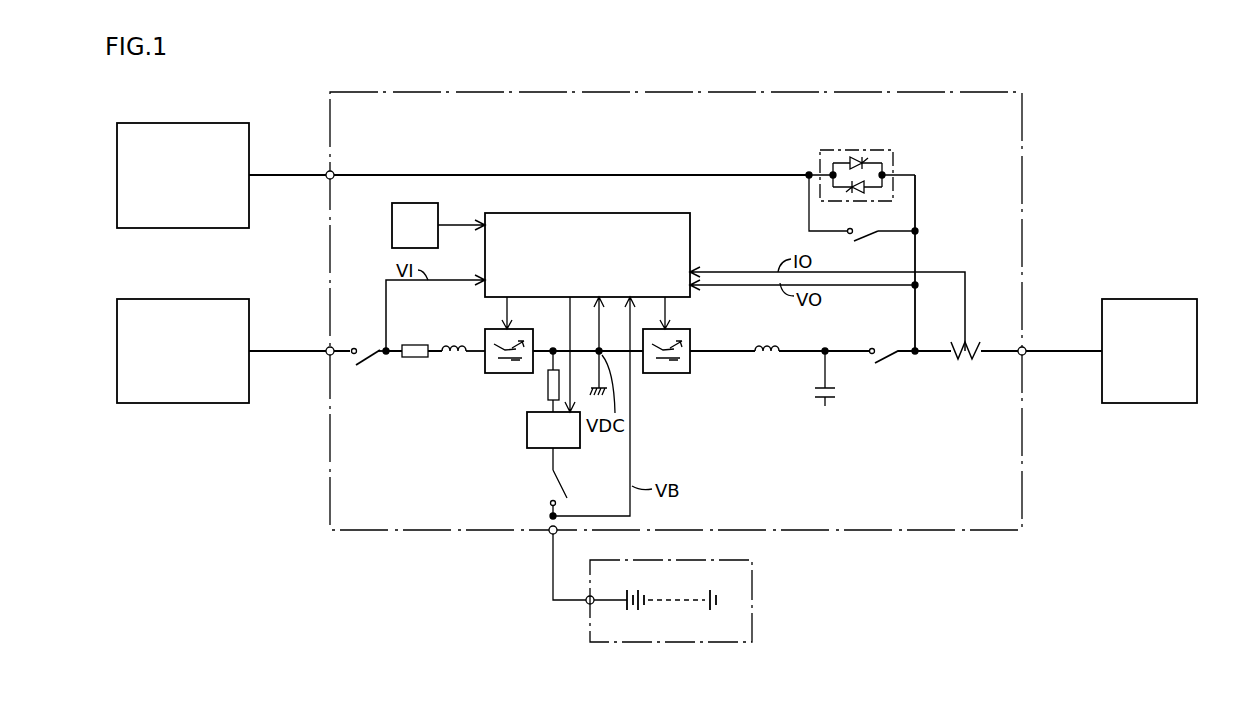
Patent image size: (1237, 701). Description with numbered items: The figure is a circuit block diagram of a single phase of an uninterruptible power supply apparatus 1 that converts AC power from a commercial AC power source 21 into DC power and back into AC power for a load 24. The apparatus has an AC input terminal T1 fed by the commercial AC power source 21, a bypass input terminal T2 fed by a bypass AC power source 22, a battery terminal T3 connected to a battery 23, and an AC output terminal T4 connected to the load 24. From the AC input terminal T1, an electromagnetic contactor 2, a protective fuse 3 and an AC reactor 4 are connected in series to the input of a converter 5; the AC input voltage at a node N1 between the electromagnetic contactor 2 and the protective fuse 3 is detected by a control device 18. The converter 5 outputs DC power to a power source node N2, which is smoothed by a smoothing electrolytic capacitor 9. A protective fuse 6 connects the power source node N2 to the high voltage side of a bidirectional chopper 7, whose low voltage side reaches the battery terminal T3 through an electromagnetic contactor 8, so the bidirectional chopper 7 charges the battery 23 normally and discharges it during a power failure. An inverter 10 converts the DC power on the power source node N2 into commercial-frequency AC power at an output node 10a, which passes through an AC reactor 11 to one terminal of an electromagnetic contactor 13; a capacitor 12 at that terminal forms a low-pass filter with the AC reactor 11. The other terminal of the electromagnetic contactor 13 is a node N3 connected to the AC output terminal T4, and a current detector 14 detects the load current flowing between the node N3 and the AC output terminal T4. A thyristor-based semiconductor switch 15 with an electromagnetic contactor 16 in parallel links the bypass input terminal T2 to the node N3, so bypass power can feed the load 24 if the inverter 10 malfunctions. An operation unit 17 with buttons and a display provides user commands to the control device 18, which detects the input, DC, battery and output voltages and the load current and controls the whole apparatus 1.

The uninterruptible power supply apparatus 1 is at (338, 92).
The electromagnetic contactor 2 is at (366, 368).
The protective fuse 3 is at (416, 358).
The AC reactor 4 is at (450, 346).
The converter 5 is at (491, 329).
The protective fuse 6 is at (548, 386).
The bidirectional chopper 7 is at (527, 428).
The electromagnetic contactor 8 is at (567, 486).
The smoothing electrolytic capacitor 9 is at (596, 386).
The inverter 10 is at (686, 327).
The output node 10a is at (691, 358).
The AC reactor 11 is at (764, 344).
The capacitor 12 is at (821, 388).
The electromagnetic contactor 13 is at (880, 364).
The current detector 14 is at (957, 362).
The semiconductor switch 15 is at (857, 150).
The electromagnetic contactor 16 is at (866, 238).
The operation unit 17 is at (406, 203).
The control device 18 is at (662, 213).
The commercial AC power source 21 is at (195, 299).
The bypass AC power source 22 is at (207, 123).
The battery 23 is at (712, 560).
The load 24 is at (1158, 299).
The AC input terminal T1 is at (327, 348).
The bypass input terminal T2 is at (327, 172).
The battery terminal T3 is at (549, 534).
The AC output terminal T4 is at (1026, 355).
The node N1 is at (389, 349).
The power source node N2 is at (554, 349).
The node N3 is at (916, 355).